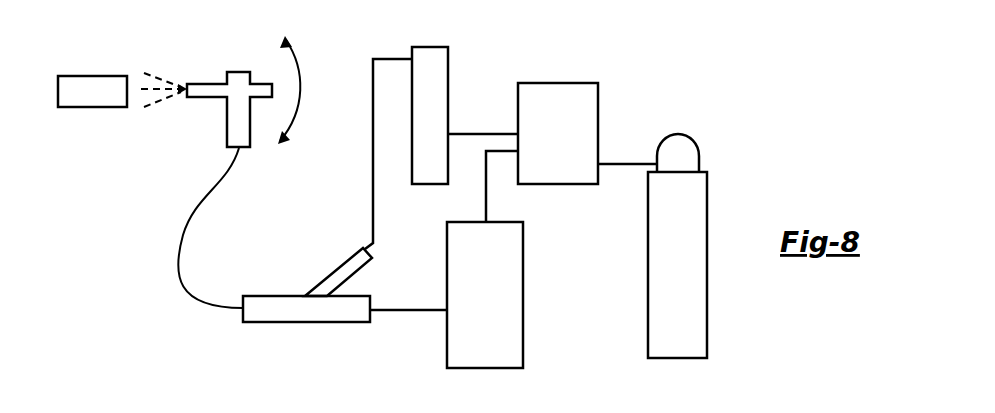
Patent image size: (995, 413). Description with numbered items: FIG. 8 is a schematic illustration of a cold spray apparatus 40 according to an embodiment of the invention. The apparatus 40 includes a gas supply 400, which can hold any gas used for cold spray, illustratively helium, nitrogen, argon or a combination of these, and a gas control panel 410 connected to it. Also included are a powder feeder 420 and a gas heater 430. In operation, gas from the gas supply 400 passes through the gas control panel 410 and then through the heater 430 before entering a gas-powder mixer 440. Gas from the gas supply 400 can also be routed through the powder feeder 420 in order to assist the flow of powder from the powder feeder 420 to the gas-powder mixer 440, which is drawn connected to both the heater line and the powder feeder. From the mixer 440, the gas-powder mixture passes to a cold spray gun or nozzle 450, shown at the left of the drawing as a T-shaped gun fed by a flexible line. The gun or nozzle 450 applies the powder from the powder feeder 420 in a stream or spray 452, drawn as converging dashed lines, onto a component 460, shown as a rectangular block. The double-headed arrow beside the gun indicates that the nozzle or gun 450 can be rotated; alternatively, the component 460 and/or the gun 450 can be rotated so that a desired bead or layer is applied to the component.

The cold spray apparatus 40 is at (753, 62).
The gas supply 400 is at (708, 192).
The gas control panel 410 is at (598, 95).
The powder feeder 420 is at (524, 311).
The gas heater 430 is at (448, 57).
The gas-powder mixer 440 is at (272, 323).
The cold spray gun or nozzle 450 is at (251, 130).
The stream or spray 452 is at (158, 110).
The component 460 is at (98, 75).